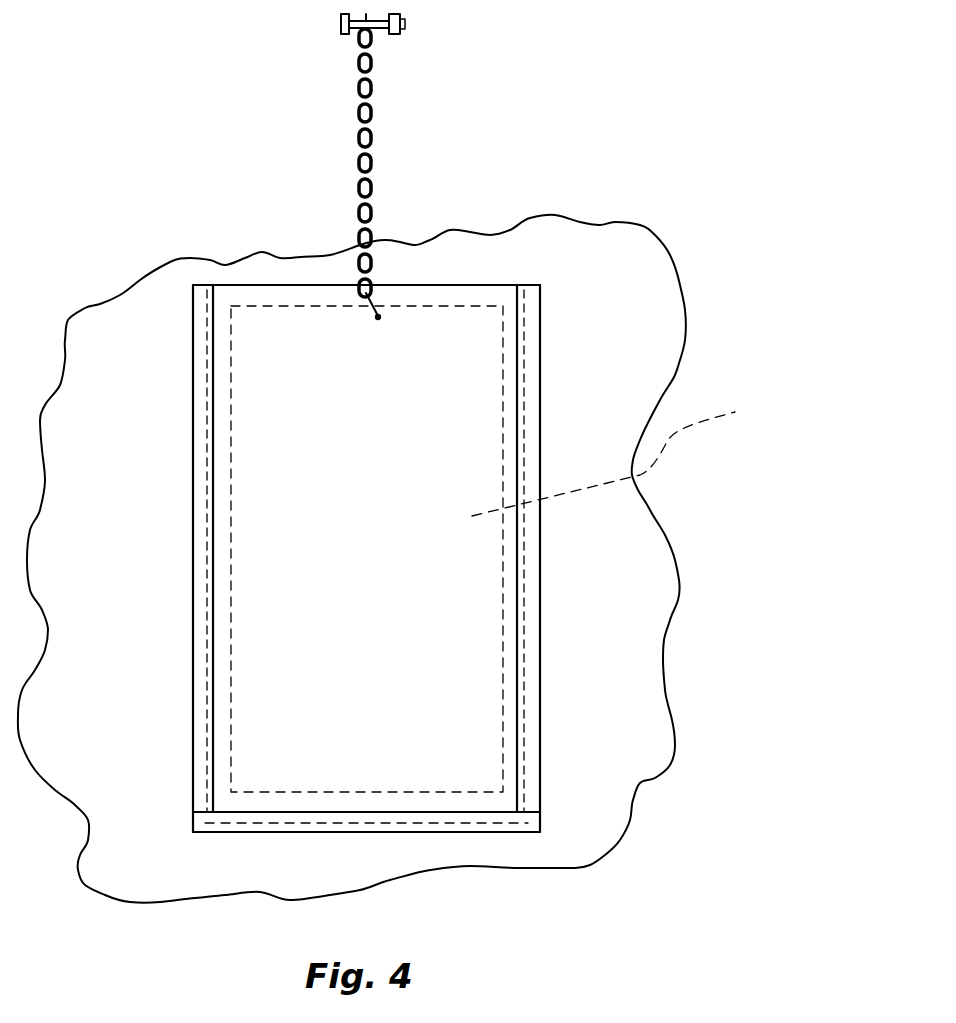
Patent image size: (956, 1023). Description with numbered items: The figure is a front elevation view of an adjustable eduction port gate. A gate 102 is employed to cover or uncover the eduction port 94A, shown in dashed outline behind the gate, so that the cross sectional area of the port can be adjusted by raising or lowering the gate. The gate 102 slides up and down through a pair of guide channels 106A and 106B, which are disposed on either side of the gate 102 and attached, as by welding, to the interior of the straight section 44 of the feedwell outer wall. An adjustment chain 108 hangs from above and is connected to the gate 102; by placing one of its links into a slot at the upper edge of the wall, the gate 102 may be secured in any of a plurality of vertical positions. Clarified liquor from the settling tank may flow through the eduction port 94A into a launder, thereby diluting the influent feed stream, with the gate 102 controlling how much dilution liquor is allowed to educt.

The straight section 44 is at (640, 648).
The eduction port 94A is at (630, 456).
The gate 102 is at (459, 755).
The guide channel 106A is at (540, 350).
The guide channel 106B is at (192, 448).
The adjustment chain 108 is at (358, 87).